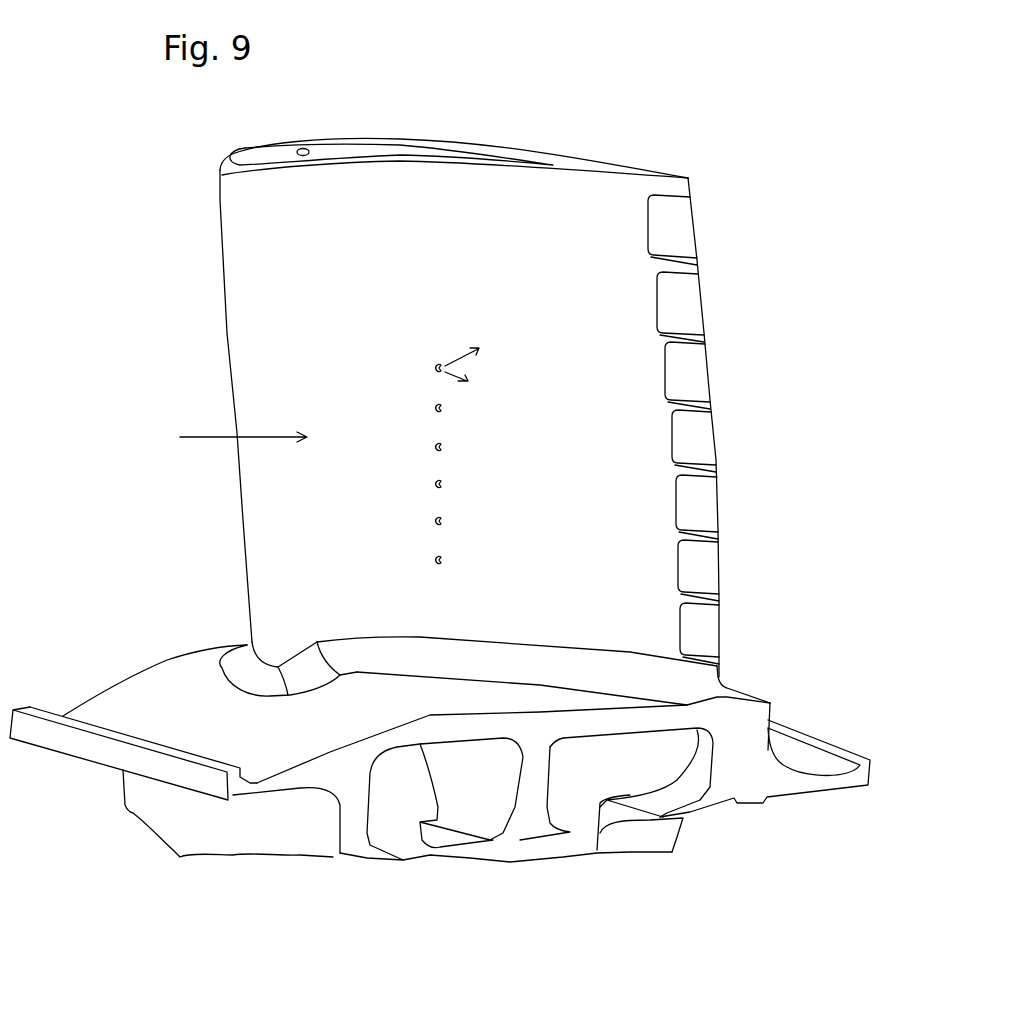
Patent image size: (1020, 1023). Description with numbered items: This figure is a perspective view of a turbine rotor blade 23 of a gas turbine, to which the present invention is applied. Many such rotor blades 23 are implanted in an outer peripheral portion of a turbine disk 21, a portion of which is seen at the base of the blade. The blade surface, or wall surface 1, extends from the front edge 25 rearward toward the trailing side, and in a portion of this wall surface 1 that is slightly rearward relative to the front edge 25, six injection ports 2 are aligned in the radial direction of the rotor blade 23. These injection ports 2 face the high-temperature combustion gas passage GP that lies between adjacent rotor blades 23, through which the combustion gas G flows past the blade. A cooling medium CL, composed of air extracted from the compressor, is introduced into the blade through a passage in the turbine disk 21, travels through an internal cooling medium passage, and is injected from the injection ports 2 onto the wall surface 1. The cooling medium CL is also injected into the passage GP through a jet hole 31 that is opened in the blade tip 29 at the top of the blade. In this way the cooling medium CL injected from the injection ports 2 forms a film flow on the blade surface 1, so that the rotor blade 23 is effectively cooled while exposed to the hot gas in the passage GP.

The wall surface 1 is at (232, 238).
The injection ports 2 is at (436, 367).
The turbine disk 21 is at (167, 673).
The rotor blade 23 is at (608, 197).
The front edge 25 is at (225, 342).
The blade tip 29 is at (573, 165).
The jet hole 31 is at (308, 150).
The cooling medium CL is at (445, 366).
The combustion gas flow G is at (200, 438).
The high-temperature gas passage GP is at (123, 380).